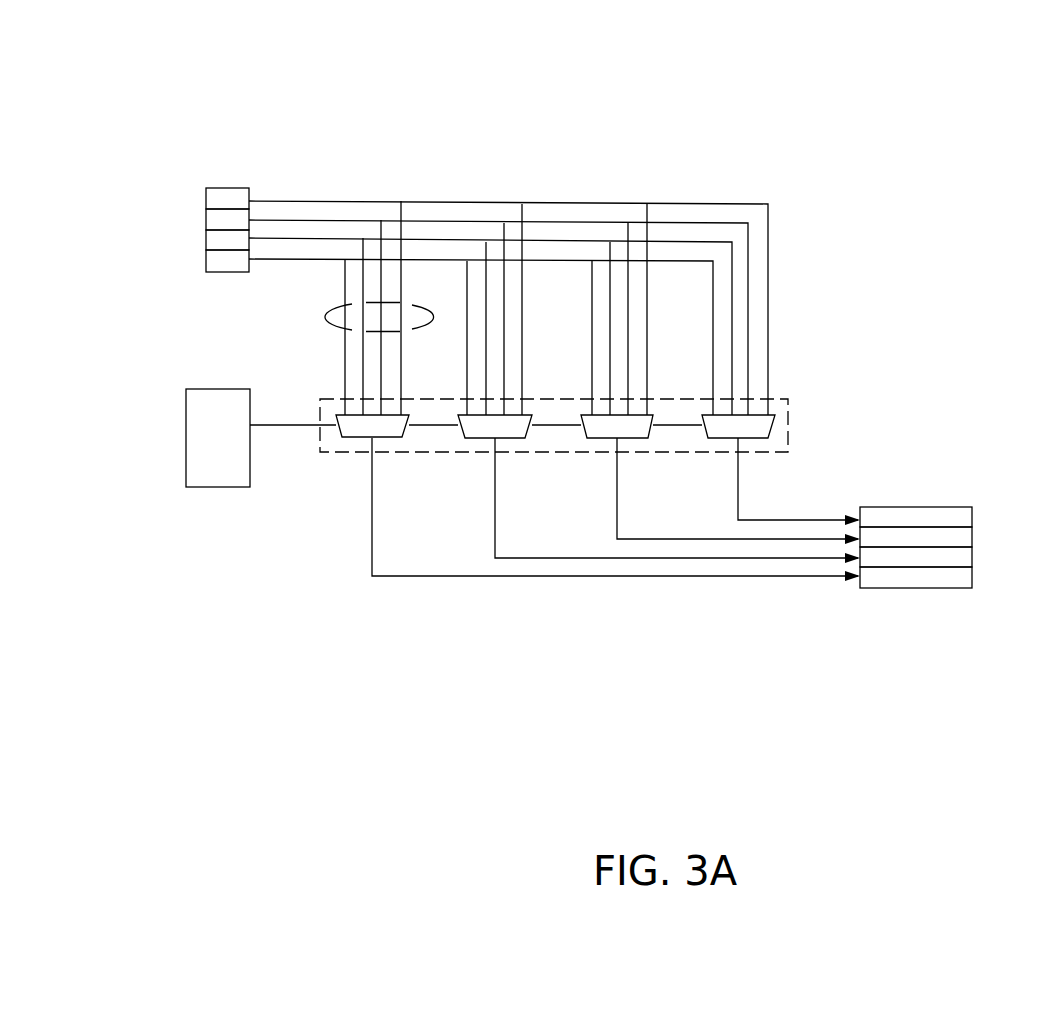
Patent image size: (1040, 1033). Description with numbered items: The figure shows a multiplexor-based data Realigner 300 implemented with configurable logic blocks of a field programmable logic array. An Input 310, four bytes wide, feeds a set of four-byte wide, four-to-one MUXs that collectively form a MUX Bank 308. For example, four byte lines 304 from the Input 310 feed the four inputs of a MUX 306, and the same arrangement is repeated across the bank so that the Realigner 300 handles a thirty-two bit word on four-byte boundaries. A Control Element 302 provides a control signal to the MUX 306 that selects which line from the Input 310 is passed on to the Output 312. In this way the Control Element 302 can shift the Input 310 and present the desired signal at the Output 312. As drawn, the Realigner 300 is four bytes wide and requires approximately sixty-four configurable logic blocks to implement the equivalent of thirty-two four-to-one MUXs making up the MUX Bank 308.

The data Realigner 300 is at (466, 93).
The Control Element 302 is at (218, 438).
The byte lines 304 is at (318, 320).
The MUX 306 is at (343, 410).
The MUX Bank 308 is at (330, 448).
The Input 310 is at (225, 188).
The Output 312 is at (917, 507).